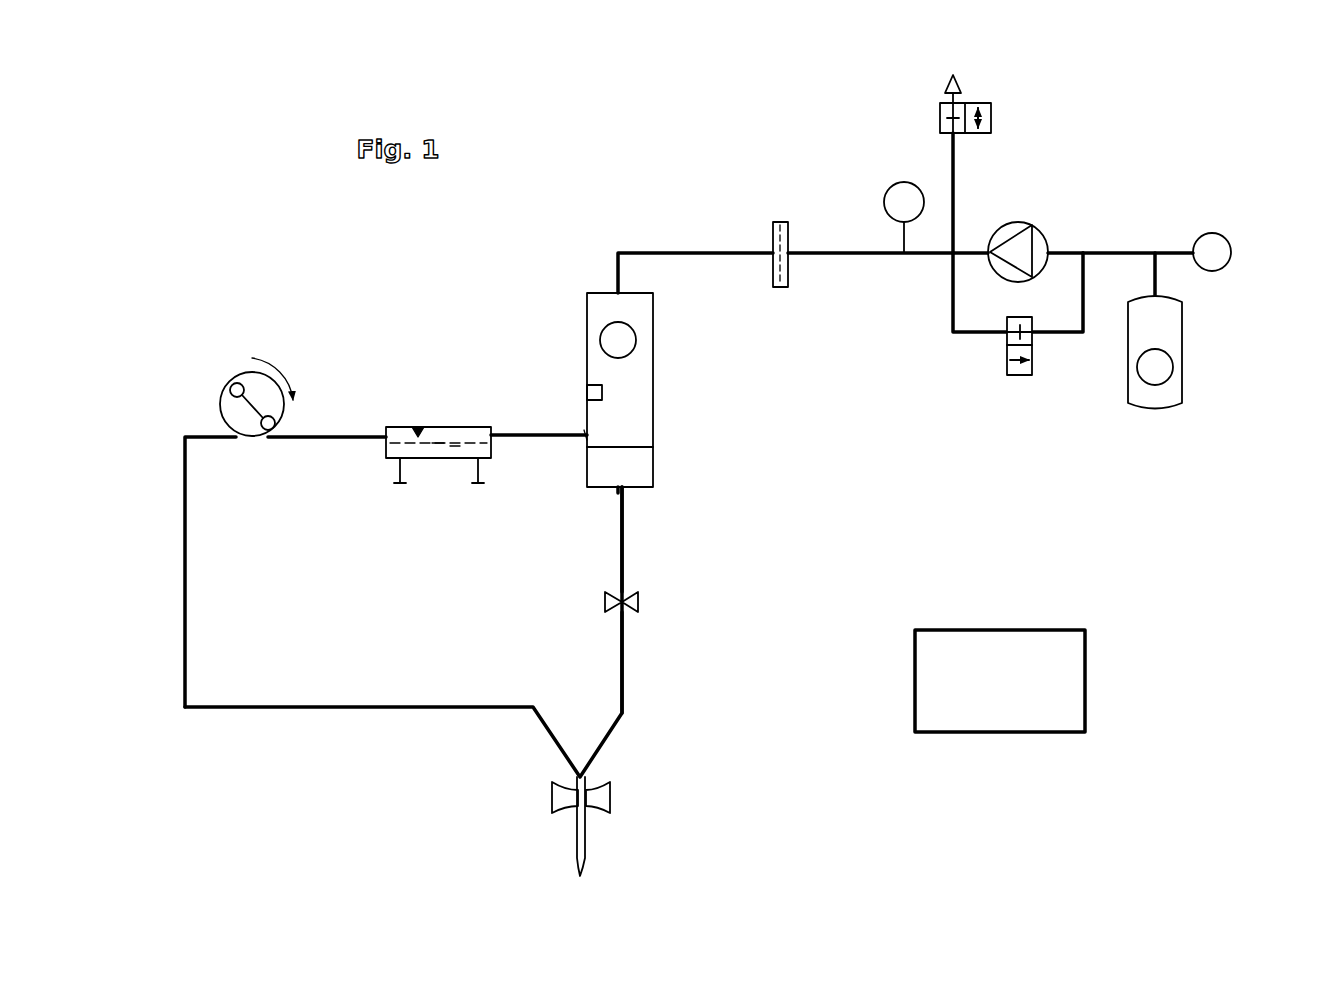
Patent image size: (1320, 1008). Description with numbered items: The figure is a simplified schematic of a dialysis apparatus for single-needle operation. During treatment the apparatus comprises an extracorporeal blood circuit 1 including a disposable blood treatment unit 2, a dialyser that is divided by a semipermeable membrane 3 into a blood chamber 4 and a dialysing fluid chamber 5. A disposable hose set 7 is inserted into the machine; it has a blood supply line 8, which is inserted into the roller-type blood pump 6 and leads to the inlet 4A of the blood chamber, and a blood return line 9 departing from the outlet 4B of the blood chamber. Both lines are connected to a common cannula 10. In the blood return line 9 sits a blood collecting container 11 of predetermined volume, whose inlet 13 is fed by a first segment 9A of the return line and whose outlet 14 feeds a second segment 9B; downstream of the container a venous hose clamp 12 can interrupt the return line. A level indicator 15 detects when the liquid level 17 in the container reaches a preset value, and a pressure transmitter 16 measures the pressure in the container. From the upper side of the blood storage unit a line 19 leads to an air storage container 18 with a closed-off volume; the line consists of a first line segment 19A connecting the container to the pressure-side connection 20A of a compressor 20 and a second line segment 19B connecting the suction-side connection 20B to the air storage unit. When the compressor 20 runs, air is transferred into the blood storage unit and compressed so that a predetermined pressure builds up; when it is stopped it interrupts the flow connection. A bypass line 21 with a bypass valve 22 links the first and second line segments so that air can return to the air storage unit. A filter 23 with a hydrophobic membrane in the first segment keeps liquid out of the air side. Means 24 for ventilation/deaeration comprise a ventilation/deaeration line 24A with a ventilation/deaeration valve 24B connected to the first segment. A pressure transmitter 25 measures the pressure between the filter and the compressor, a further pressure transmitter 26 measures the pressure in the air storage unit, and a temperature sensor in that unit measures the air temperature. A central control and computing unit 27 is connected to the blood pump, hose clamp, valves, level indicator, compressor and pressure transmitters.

The extracorporeal blood circuit 1 is at (494, 623).
The blood treatment unit 2 is at (458, 427).
The semipermeable membrane 3 is at (438, 450).
The blood chamber 4 is at (417, 430).
The inlet of blood chamber 4A is at (383, 428).
The outlet of blood chamber 4B is at (497, 428).
The dialysing fluid chamber 5 is at (455, 455).
The blood pump 6 is at (240, 372).
The hose set 7 is at (312, 692).
The blood supply line 8 is at (190, 543).
The blood return line 9 is at (627, 566).
The first segment of blood return line 9A is at (522, 440).
The second segment of blood return line 9B is at (626, 665).
The common cannula 10 is at (585, 837).
The blood collecting container 11 is at (656, 395).
The venous hose clamp 12 is at (641, 600).
The inlet of blood collecting container 13 is at (585, 440).
The outlet of blood collecting container 14 is at (625, 488).
The level indicator 15 is at (585, 392).
The pressure transmitter 16 is at (636, 325).
The liquid level 17 is at (632, 448).
The air storage container 18 is at (1190, 332).
The line 19 is at (695, 250).
The first line segment 19A is at (848, 258).
The second line segment 19B is at (1115, 250).
The compressor 20 is at (1017, 222).
The pressure-side connection of compressor 20A is at (990, 247).
The suction-side connection of compressor 20B is at (1052, 247).
The bypass line 21 is at (978, 335).
The bypass valve 22 is at (1020, 377).
The filter 23 is at (773, 232).
The means for ventilation/deaeration 24 is at (962, 164).
The ventilation/deaeration line 24A is at (953, 165).
The ventilation/deaeration valve 24B is at (1000, 117).
The pressure transmitter 25 is at (884, 202).
The pressure transmitter 26 is at (1212, 232).
The central control and computing unit 27 is at (1042, 615).